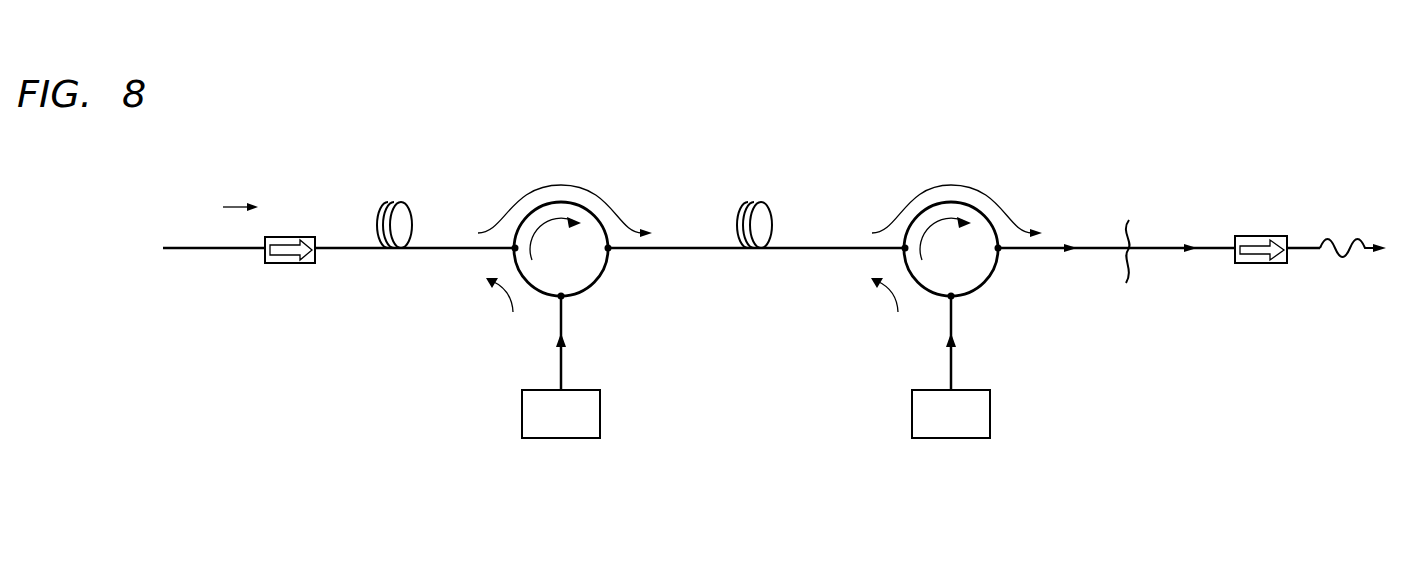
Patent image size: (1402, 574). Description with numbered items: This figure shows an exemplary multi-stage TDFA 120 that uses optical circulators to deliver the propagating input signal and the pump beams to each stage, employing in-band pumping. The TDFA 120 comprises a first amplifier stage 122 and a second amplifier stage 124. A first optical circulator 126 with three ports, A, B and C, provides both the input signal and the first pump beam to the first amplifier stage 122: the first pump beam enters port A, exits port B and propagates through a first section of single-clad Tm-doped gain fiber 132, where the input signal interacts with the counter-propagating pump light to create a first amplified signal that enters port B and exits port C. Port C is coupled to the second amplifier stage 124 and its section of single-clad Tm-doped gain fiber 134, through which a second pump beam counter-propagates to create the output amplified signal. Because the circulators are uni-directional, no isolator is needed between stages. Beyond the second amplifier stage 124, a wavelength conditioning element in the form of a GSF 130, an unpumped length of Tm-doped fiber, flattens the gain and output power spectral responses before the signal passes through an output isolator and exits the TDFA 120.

The multi-stage TDFA 120 is at (133, 155).
The first amplifier stage 122 is at (563, 155).
The second amplifier stage 124 is at (953, 155).
The first optical circulator 126 is at (598, 285).
The GSF 130 is at (1127, 289).
The single-clad Tm-doped gain fiber 132 is at (372, 236).
The single-clad Tm-doped gain fiber 134 is at (738, 236).